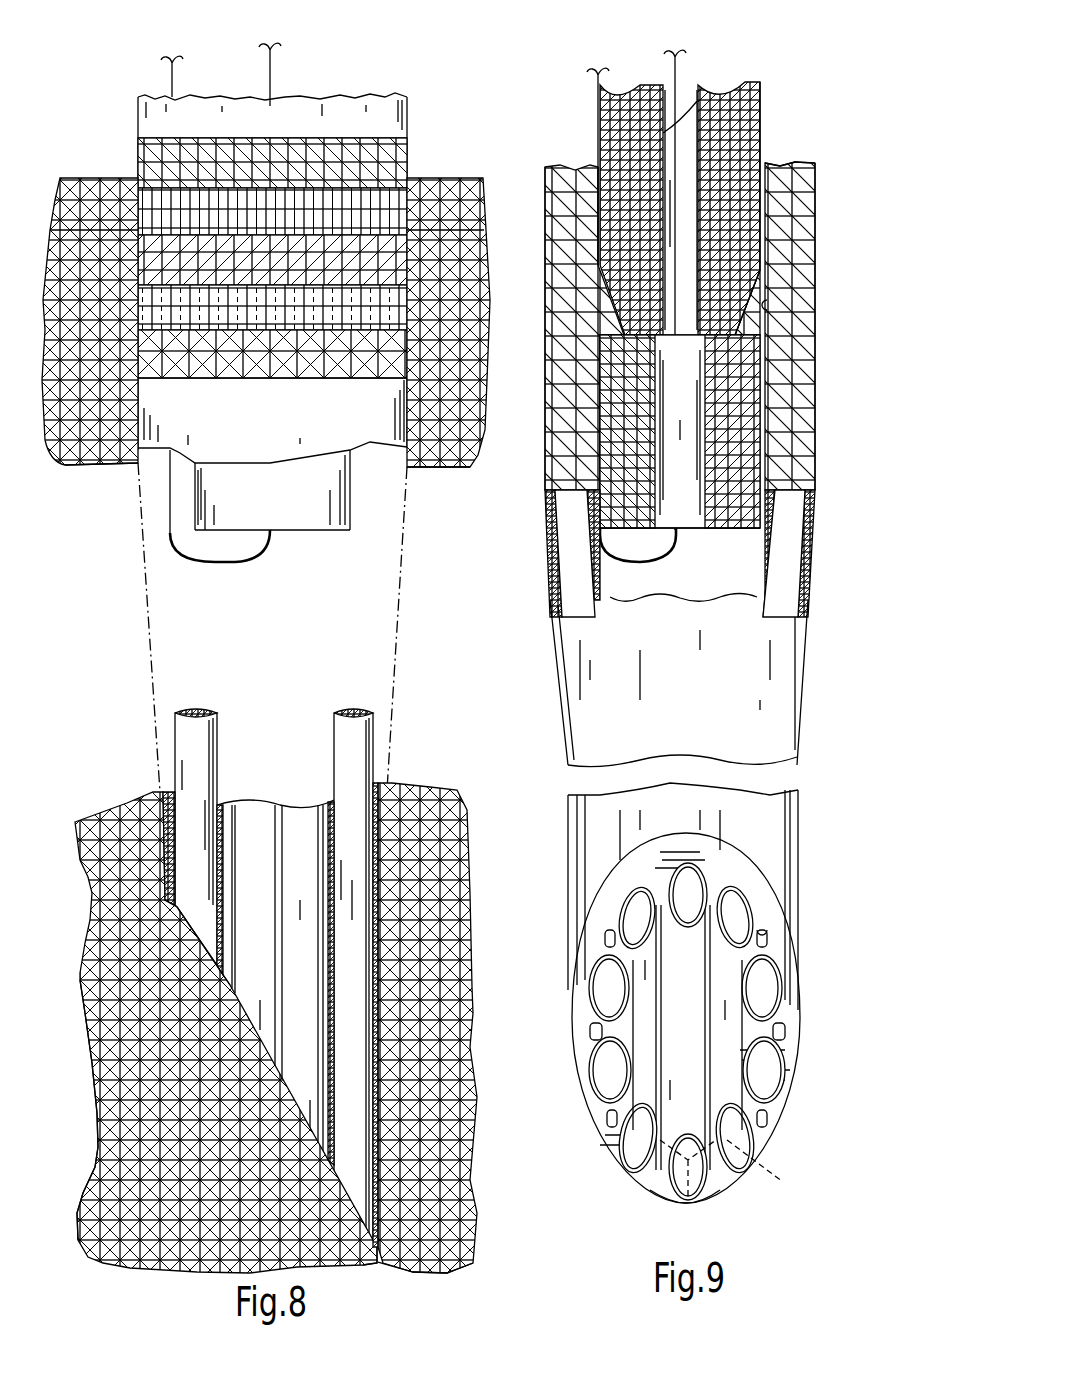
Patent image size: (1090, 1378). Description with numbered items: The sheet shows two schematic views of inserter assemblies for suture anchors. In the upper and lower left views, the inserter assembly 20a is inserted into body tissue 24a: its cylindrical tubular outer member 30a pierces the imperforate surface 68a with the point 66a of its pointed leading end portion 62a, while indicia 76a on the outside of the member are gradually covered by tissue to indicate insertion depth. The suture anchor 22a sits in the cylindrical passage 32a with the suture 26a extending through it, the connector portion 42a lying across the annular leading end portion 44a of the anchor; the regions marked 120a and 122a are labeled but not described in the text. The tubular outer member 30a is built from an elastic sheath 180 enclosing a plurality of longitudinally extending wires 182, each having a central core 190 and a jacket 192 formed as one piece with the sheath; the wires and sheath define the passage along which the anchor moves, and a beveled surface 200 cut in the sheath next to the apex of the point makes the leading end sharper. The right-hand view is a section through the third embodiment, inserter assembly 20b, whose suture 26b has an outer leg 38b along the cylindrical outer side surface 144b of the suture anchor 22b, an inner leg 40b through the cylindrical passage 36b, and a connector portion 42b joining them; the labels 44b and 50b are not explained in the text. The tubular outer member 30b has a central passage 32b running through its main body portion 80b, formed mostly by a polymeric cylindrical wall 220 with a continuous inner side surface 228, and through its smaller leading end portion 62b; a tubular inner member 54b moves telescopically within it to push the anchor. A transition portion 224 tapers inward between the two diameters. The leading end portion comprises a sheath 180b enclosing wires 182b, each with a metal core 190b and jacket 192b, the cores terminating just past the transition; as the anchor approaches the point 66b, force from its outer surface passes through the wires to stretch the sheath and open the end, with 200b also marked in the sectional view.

In FIG. 8, the inserter assembly 20a is at (127, 132).
In FIG. 8, the suture 26a is at (275, 83).
In FIG. 8, the left support block 120a is at (100, 208).
In FIG. 8, the imperforate surface 68a is at (427, 178).
In FIG. 8, the indicia 76a is at (62, 415).
In FIG. 8, the tubular outer member 30a is at (132, 435).
In FIG. 8, the elastic sheath 180 is at (158, 448).
In FIG. 8, the connector portion 42a is at (213, 565).
In FIG. 8, the suture anchor 22a is at (288, 498).
In FIG. 8, the annular leading end portion 44a is at (332, 532).
In FIG. 8, the right block lower edge 122a is at (438, 465).
In FIG. 8, the central core 190 is at (185, 713).
In FIG. 8, the wires 182 is at (222, 773).
In FIG. 8, the jacket 192 is at (323, 805).
In FIG. 8, the pointed leading end portion 62a is at (393, 823).
In FIG. 8, the cylindrical passage 32a is at (230, 945).
In FIG. 8, the body tissue 24a is at (93, 1163).
In FIG. 8, the beveled surface 200 is at (457, 1265).
In FIG. 8, the point 66a is at (380, 1257).
In FIG. 9, the outer leg 38b is at (587, 90).
In FIG. 9, the suture 26b is at (685, 72).
In FIG. 9, the inner leg 40b is at (733, 83).
In FIG. 9, the tubular inner member 54b is at (765, 130).
In FIG. 9, the cylindrical wall 220 is at (790, 180).
In FIG. 9, the tubular outer member 30b is at (820, 200).
In FIG. 9, the main body portion 80b is at (790, 258).
In FIG. 9, the cylindrical inner side surface 228 is at (770, 300).
In FIG. 9, the cylindrical outer side surface 144b is at (760, 362).
In FIG. 9, the inserter assembly 20b is at (817, 377).
In FIG. 9, the suture anchor 22b is at (767, 403).
In FIG. 9, the cylindrical passage 36b is at (688, 455).
In FIG. 9, the block bottom face 44b is at (735, 530).
In FIG. 9, the connector portion 42b is at (637, 563).
In FIG. 9, the shell inner edge 50b is at (593, 310).
In FIG. 9, the wires 182b is at (555, 575).
In FIG. 9, the central passage 32b is at (747, 567).
In FIG. 9, the transition portion 224 is at (813, 650).
In FIG. 9, the leading end portion 62b is at (800, 793).
In FIG. 9, the core 190b is at (570, 540).
In FIG. 9, the jacket 192b is at (623, 600).
In FIG. 9, the sheath 180b is at (772, 929).
In FIG. 9, the hidden edge 200b is at (751, 1170).
In FIG. 9, the point 66b is at (696, 1212).